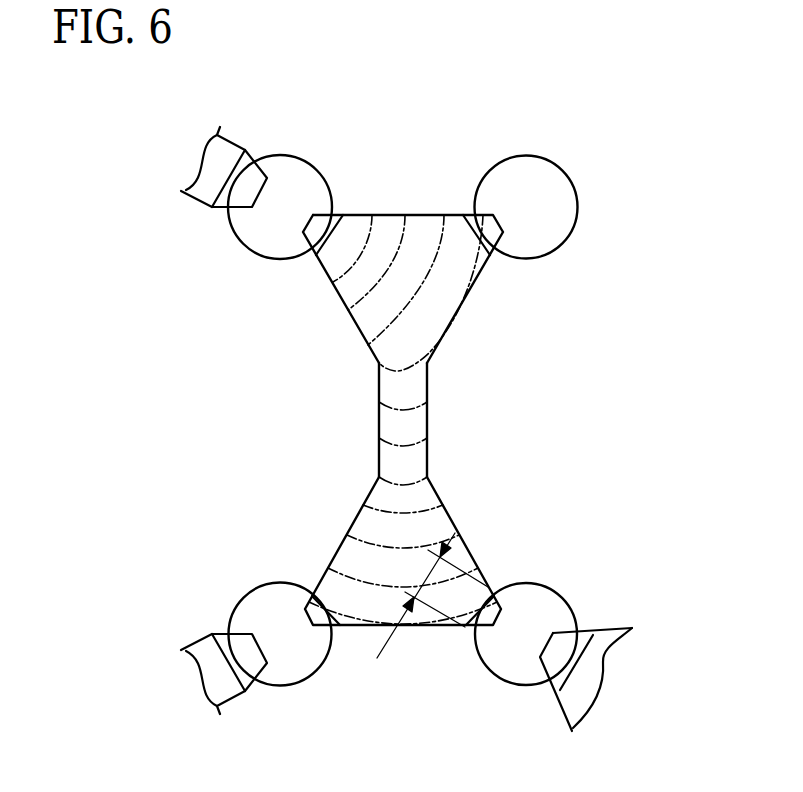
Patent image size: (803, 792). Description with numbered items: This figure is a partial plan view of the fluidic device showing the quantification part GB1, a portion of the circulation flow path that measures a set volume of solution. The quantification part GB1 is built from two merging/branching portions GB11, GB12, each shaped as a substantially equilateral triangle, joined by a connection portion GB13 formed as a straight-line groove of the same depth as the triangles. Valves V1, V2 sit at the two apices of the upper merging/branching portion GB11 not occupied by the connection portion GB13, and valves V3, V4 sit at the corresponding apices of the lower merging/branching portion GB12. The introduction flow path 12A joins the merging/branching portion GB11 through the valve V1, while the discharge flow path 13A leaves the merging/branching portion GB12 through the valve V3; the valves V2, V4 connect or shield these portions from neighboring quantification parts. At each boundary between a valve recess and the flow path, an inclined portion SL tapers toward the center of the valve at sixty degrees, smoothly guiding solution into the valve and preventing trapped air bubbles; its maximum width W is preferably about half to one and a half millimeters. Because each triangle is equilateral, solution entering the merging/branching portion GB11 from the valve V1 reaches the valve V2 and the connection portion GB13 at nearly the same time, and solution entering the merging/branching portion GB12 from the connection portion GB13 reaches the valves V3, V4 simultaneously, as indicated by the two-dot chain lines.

The quantification part GB1 is at (412, 178).
The merging/branching portion GB11 is at (440, 295).
The merging/branching portion GB12 is at (433, 527).
The connection portion GB13 is at (415, 418).
The inclined portion SL is at (255, 178).
The valve V1 is at (230, 230).
The valve V2 is at (557, 165).
The valve V3 is at (240, 600).
The valve V4 is at (510, 683).
The introduction flow path 12A is at (215, 170).
The discharge flow path 13A is at (210, 670).
The maximum width W is at (415, 611).